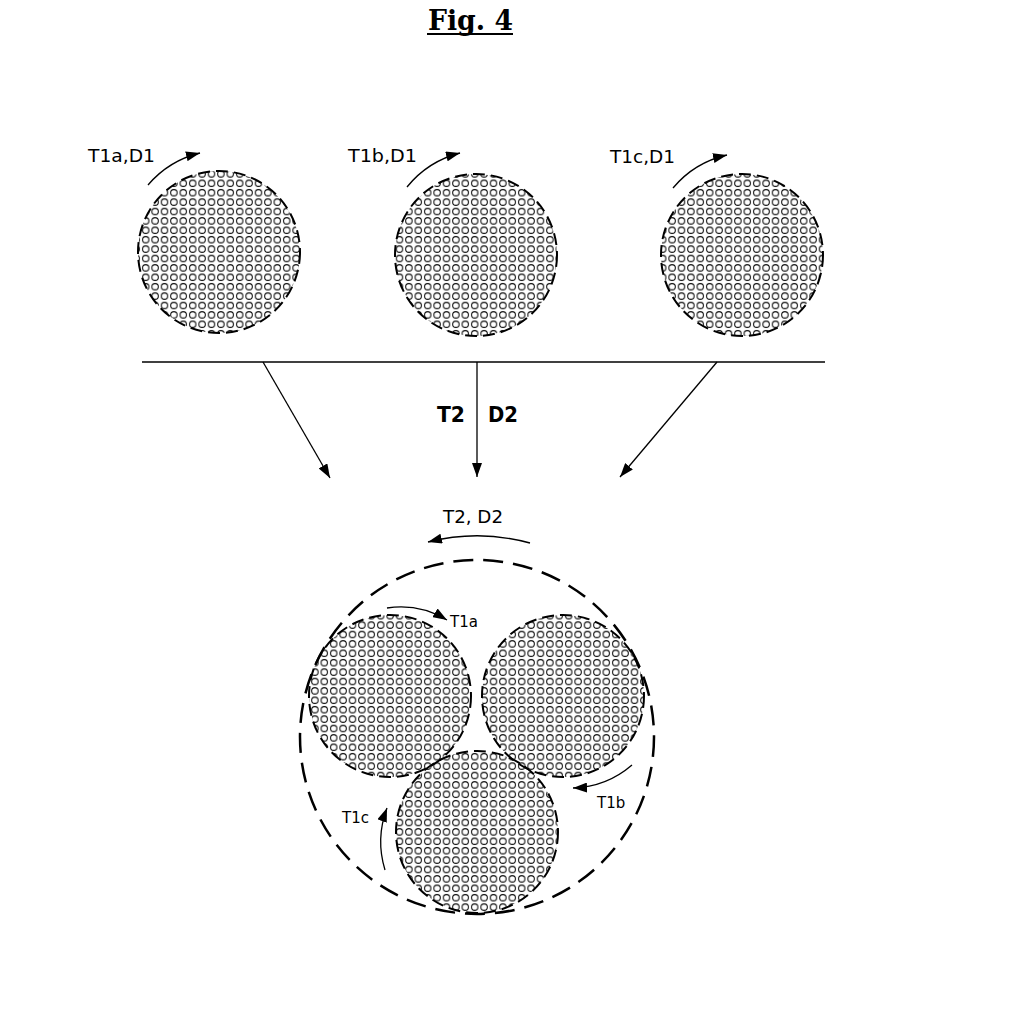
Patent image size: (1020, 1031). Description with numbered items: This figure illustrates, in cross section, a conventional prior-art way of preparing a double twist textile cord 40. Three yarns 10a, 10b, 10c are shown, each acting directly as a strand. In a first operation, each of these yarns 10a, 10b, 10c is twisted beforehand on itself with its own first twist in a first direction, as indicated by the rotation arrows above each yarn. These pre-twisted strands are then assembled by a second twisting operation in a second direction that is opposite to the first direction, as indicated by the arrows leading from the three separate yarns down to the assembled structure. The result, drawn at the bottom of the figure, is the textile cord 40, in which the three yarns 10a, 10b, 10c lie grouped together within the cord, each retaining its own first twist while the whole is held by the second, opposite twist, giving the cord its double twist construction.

The yarn 10a is at (142, 230).
The yarn 10b is at (555, 240).
The yarn 10c is at (813, 220).
The textile cord 40 is at (590, 600).